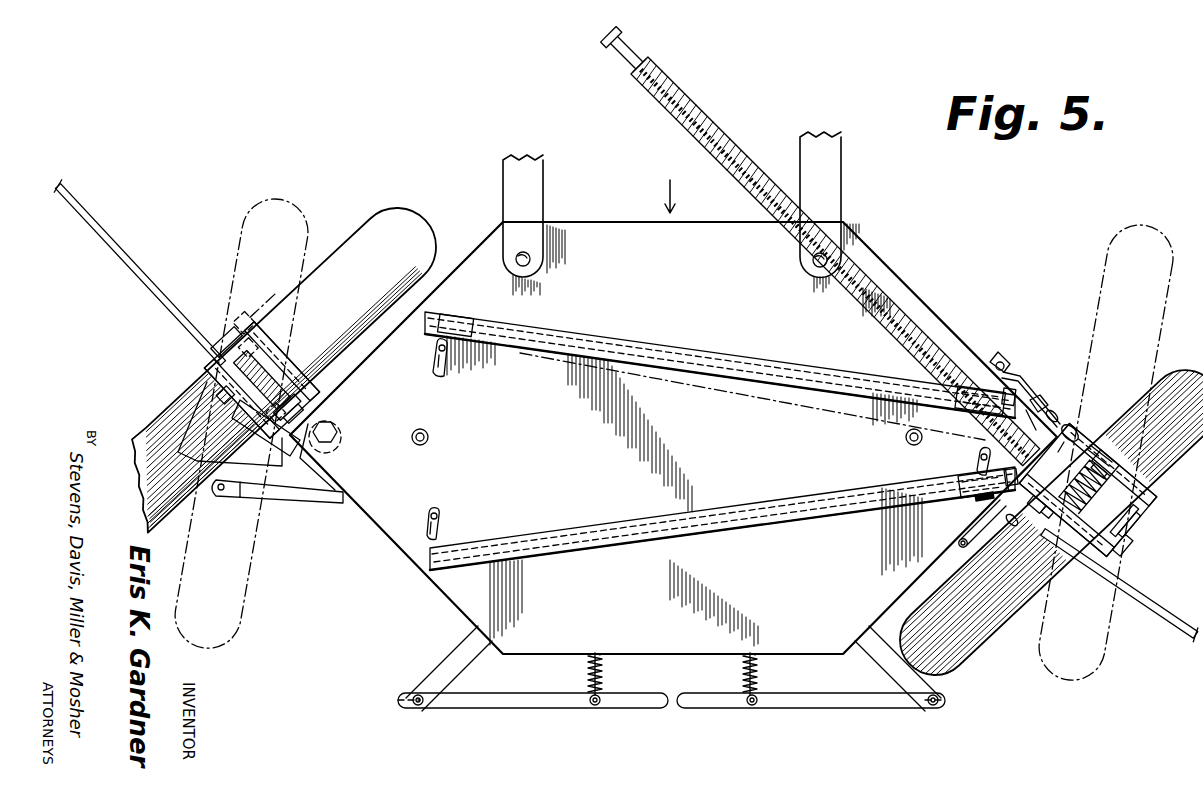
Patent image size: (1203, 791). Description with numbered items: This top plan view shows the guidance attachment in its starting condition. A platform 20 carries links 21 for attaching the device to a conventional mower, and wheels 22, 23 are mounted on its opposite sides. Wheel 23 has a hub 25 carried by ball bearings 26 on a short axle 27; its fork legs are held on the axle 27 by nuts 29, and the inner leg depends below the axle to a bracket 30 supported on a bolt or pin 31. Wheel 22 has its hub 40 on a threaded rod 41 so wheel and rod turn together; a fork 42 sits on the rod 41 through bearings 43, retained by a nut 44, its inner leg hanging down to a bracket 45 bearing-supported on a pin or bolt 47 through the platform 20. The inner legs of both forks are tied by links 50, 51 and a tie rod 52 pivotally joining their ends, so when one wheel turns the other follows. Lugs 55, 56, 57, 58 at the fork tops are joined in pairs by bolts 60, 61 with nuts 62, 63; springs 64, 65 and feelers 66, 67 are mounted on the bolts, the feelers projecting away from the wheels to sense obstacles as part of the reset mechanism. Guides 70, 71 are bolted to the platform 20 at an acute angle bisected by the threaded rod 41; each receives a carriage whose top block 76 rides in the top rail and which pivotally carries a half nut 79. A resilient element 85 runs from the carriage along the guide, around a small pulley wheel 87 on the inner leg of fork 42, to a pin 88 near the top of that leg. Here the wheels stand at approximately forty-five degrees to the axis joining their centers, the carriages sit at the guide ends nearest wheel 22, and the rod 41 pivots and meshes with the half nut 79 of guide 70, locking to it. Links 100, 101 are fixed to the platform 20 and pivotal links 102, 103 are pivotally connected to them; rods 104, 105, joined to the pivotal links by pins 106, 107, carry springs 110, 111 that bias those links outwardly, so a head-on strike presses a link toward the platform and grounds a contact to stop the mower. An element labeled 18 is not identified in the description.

The pivot bracket 18 is at (1003, 380).
The platform 20 is at (681, 446).
The links 21 is at (543, 180).
The wheel 22 is at (965, 657).
The wheel 23 is at (372, 222).
The hub 25 is at (318, 382).
The ball bearings 26 is at (260, 325).
The short axle 27 is at (224, 312).
The nuts 29 is at (212, 352).
The bracket 30 is at (298, 456).
The bolt or pin 31 is at (342, 437).
The hub 40 is at (1133, 487).
The threaded rod 41 is at (726, 134).
The fork 42 is at (1138, 507).
The bearings 43 is at (1134, 520).
The nut 44 is at (1120, 540).
The bracket 45 is at (1034, 428).
The pin or bolt 47 is at (979, 452).
The link 50 is at (985, 520).
The link 51 is at (240, 440).
The tie rod 52 is at (292, 503).
The lug 55 is at (1106, 476).
The lug 56 is at (1032, 508).
The lug 57 is at (285, 335).
The lug 58 is at (207, 383).
The bolt 60 is at (1043, 522).
The bolt 61 is at (232, 404).
The nut 62 is at (1093, 466).
The nut 63 is at (285, 346).
The spring 64 is at (1106, 452).
The spring 65 is at (268, 346).
The feeler 66 is at (1162, 614).
The feeler 67 is at (124, 247).
The guide 70 is at (713, 346).
The guide 71 is at (723, 546).
The top block 76 is at (962, 388).
The half nut 79 is at (1005, 388).
The resilient element 85 is at (1025, 396).
The small pulley wheel 87 is at (1053, 413).
The pin 88 is at (1076, 430).
The link 100 is at (890, 671).
The link 101 is at (446, 660).
The pivotal link 102 is at (848, 706).
The pivotal link 103 is at (502, 708).
The rod 104 is at (758, 675).
The rod 105 is at (587, 675).
The pin 106 is at (750, 708).
The pin 107 is at (594, 708).
The spring 110 is at (742, 675).
The spring 111 is at (603, 675).